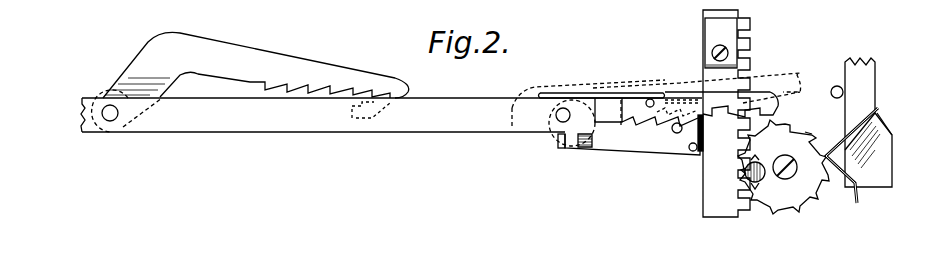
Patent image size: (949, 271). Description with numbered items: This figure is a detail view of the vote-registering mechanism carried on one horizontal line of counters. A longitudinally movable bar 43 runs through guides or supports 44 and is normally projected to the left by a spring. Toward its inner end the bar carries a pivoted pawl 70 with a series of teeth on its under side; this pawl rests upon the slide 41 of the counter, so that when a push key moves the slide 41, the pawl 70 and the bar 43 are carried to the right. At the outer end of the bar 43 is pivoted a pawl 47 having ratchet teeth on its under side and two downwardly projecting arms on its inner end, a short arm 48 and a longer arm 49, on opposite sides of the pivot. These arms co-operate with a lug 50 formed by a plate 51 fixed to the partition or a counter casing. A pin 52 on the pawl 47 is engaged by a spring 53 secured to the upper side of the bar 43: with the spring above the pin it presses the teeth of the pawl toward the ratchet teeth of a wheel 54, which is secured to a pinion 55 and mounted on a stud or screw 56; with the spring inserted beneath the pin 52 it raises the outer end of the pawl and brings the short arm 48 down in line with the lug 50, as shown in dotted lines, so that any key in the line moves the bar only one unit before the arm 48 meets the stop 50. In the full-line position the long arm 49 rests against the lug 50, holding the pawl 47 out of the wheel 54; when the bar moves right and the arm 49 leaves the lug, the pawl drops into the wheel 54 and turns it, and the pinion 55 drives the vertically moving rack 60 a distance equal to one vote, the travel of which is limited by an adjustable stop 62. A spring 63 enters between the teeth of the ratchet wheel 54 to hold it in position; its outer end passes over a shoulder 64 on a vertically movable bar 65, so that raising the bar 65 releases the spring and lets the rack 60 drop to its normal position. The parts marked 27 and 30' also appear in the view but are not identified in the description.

The pivoted pawl 70 is at (256, 65).
The slide 41 is at (360, 130).
The longitudinally movable bar 43 is at (429, 111).
The short arm 48 is at (532, 135).
The long arm 49 is at (582, 147).
The lug 50 is at (562, 148).
The plate 51 is at (629, 126).
The pin 52 is at (650, 99).
The spring 53 is at (607, 93).
The pawl 47 is at (700, 103).
The adjustable stop 62 is at (721, 43).
The rack 60 is at (734, 113).
The ratchet wheel 54 is at (783, 167).
The pinion 55 is at (806, 133).
The stud or screw 56 is at (797, 168).
The spring 63 is at (880, 109).
The shoulder 64 is at (892, 123).
The vertically movable bar 65 is at (861, 122).
The member 30' is at (299, 6).
The member 27 is at (365, 6).
The guides or supports 44 is at (633, 6).